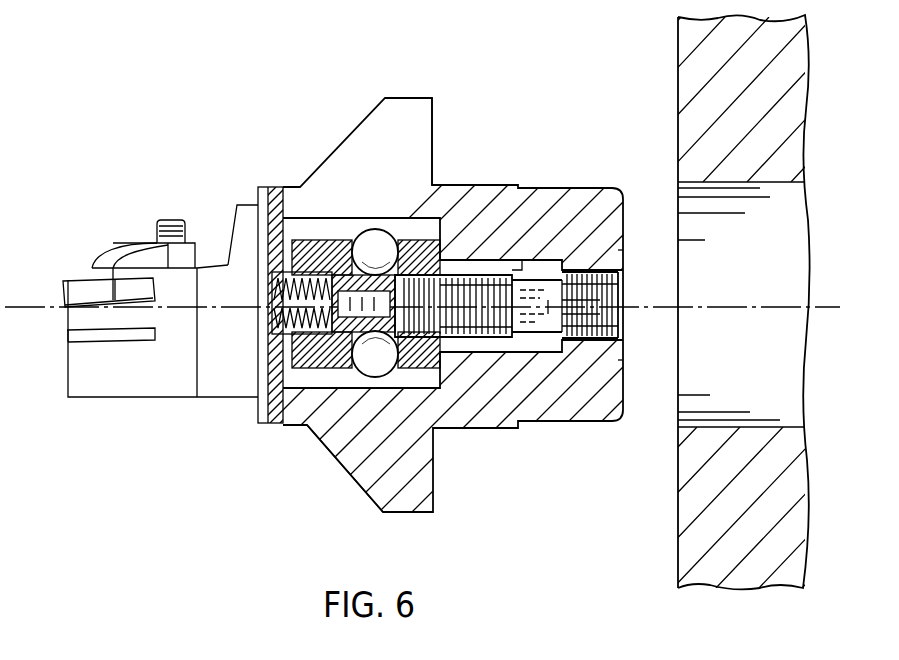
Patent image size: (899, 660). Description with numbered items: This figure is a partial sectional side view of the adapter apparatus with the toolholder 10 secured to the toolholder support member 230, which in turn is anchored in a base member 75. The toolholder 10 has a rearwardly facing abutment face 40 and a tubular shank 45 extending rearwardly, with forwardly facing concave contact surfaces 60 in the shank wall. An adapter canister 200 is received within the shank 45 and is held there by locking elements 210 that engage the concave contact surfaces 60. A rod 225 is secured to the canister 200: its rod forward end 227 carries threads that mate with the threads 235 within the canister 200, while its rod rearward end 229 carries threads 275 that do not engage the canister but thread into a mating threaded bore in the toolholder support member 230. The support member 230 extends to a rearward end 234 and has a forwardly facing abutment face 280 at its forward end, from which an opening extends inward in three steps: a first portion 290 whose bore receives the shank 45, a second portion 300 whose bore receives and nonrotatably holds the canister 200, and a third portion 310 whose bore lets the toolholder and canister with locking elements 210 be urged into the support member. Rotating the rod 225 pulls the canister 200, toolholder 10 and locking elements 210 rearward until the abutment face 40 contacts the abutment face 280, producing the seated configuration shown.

The toolholder 10 is at (153, 205).
The forwardly facing abutment face 280 is at (260, 215).
The rearwardly facing abutment face 40 is at (325, 184).
The forwardly facing concave contact surfaces 60 is at (345, 140).
The tubular shank 45 is at (422, 160).
The threads 235 is at (330, 450).
The first portion 290 is at (343, 238).
The adapter canister 200 is at (443, 352).
The locking elements 210 is at (372, 230).
The rod forward end 227 is at (455, 272).
The second portion 300 is at (538, 264).
The rod 225 is at (542, 324).
The third portion 310 is at (597, 272).
The rod rearward end 229 is at (573, 270).
The toolholder support member 230 is at (582, 296).
The rearward end 234 is at (623, 262).
The threads 275 is at (625, 327).
The base member 75 is at (678, 42).